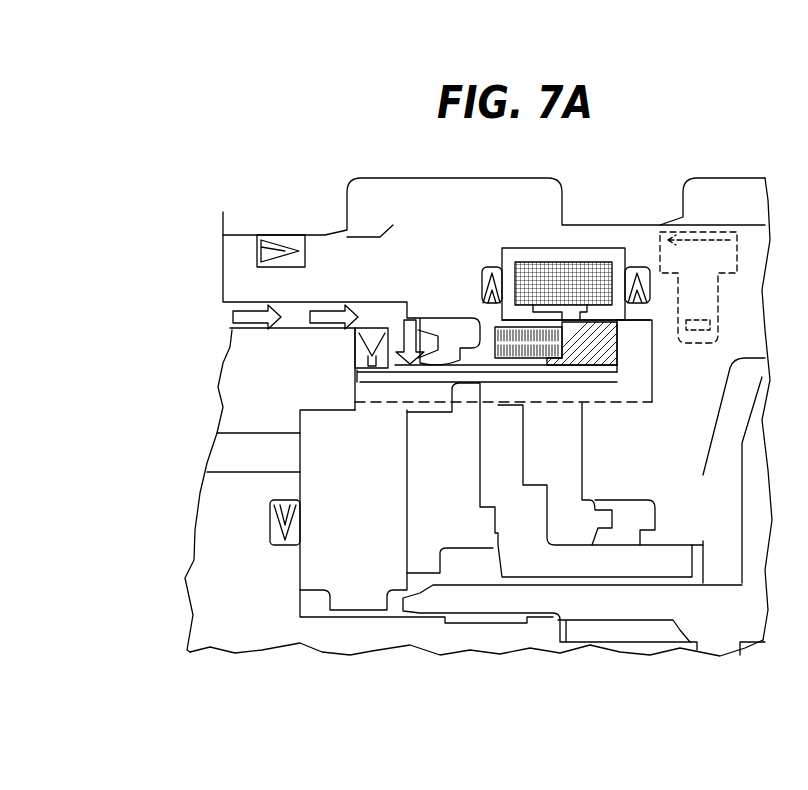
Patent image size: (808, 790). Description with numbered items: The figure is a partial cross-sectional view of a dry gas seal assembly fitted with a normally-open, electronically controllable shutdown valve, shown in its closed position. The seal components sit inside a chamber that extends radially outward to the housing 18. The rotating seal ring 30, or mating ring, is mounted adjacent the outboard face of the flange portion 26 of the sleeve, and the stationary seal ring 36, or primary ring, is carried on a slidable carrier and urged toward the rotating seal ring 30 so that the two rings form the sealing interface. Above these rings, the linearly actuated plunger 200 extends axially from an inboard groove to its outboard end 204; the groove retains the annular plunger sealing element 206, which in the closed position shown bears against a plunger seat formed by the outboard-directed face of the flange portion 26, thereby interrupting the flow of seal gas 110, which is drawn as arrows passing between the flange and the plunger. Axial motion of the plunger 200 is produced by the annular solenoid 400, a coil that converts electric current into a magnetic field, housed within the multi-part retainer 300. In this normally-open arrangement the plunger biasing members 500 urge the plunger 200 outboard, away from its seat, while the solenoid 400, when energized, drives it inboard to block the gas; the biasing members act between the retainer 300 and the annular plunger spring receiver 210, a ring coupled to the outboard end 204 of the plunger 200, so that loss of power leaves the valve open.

The housing 18 is at (515, 150).
The flange portion 26 is at (280, 415).
The rotating seal ring 30 is at (360, 529).
The stationary seal ring 36 is at (466, 505).
The seal gas 110 is at (233, 313).
The plunger 200 is at (478, 372).
The outboard end 204 is at (367, 330).
The plunger sealing element 206 is at (353, 355).
The plunger spring receiver 210 is at (585, 341).
The retainer 300 is at (442, 268).
The solenoid 400 is at (602, 262).
The plunger biasing members 500 is at (515, 327).